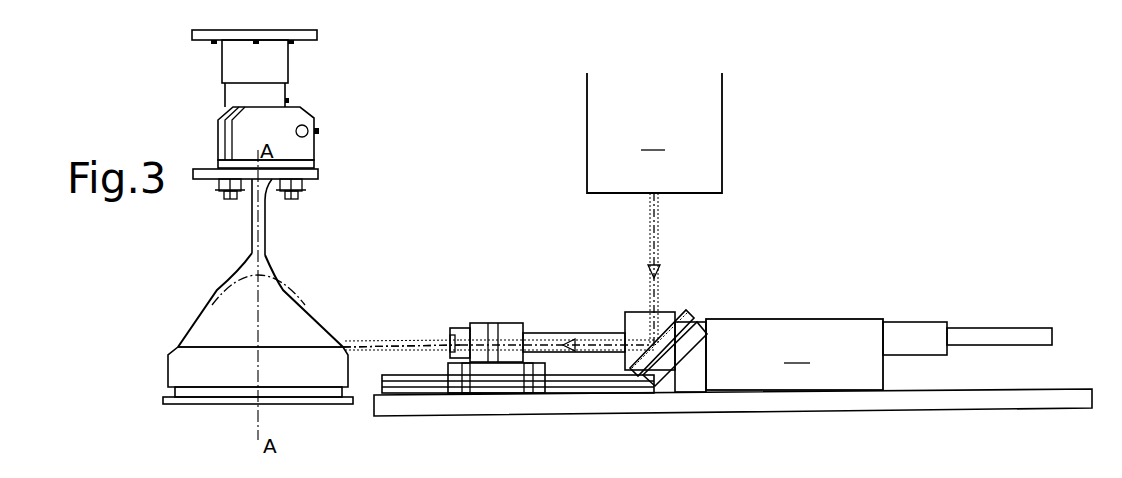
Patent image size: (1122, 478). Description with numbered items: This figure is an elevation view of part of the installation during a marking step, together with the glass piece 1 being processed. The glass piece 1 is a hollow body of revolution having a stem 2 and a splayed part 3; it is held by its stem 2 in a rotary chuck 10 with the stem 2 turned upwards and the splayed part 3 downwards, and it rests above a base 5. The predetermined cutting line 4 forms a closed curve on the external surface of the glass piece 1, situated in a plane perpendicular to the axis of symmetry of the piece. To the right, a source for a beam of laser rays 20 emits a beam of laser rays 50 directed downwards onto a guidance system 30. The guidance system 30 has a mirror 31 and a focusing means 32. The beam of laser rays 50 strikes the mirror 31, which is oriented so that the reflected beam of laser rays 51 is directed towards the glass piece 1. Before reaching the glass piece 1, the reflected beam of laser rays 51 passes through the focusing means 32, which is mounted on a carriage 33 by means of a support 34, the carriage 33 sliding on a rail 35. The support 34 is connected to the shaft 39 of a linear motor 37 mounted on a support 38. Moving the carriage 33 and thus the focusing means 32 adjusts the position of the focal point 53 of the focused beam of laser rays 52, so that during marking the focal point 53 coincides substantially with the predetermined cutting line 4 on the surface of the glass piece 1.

The glass piece 1 is at (212, 292).
The stem 2 is at (268, 198).
The splayed part 3 is at (311, 308).
The predetermined cutting line 4 is at (228, 347).
The base block 5 is at (183, 370).
The rotary chuck 10 is at (299, 116).
The source for a beam of laser rays 20 is at (654, 133).
The guidance system 30 is at (733, 319).
The mirror 31 is at (676, 312).
The focusing means 32 is at (450, 330).
The carriage 33 is at (485, 380).
The support 34 is at (483, 323).
The rail 35 is at (594, 383).
The linear motor 37 is at (912, 330).
The support 38 is at (794, 354).
The shaft 39 is at (598, 333).
The beam of laser rays 50 is at (660, 232).
The reflected beam of laser rays 51 is at (551, 338).
The focused beam of laser rays 52 is at (420, 332).
The focal point 53 is at (345, 345).